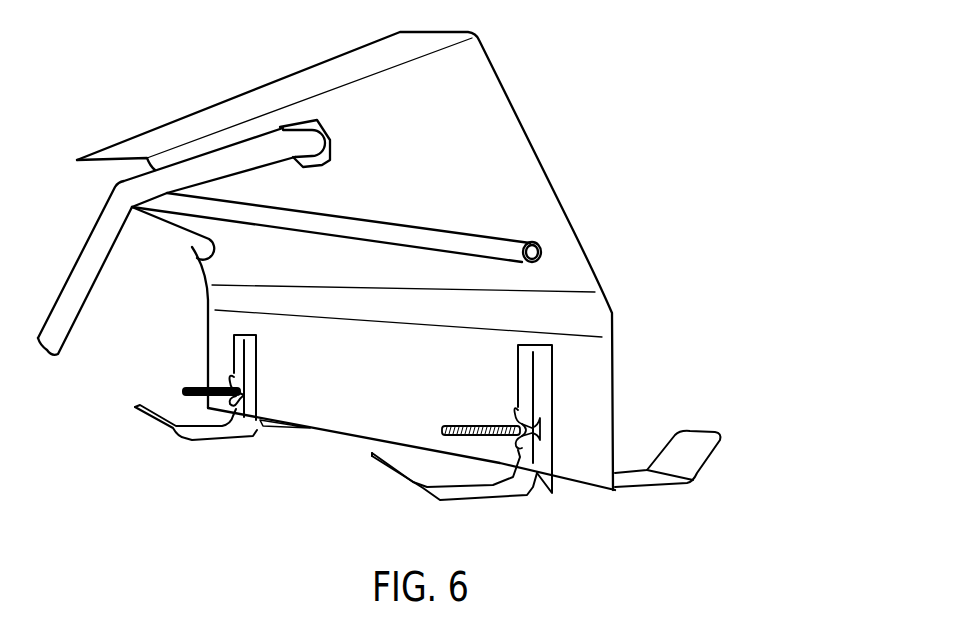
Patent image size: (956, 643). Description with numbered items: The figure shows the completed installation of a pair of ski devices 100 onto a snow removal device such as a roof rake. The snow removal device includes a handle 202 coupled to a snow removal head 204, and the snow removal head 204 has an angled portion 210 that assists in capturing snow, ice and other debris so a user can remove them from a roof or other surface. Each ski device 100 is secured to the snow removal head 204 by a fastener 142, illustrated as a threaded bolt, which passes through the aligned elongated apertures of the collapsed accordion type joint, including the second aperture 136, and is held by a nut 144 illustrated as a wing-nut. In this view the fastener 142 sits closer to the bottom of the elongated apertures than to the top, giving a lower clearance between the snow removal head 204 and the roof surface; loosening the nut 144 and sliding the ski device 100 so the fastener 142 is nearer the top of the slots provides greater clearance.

The ski device 100 is at (733, 335).
The second aperture 136 is at (530, 455).
The fastener 142 is at (463, 423).
The nut 144 is at (518, 410).
The handle 202 is at (68, 282).
The snow removal head 204 is at (525, 132).
The angled portion 210 is at (327, 427).